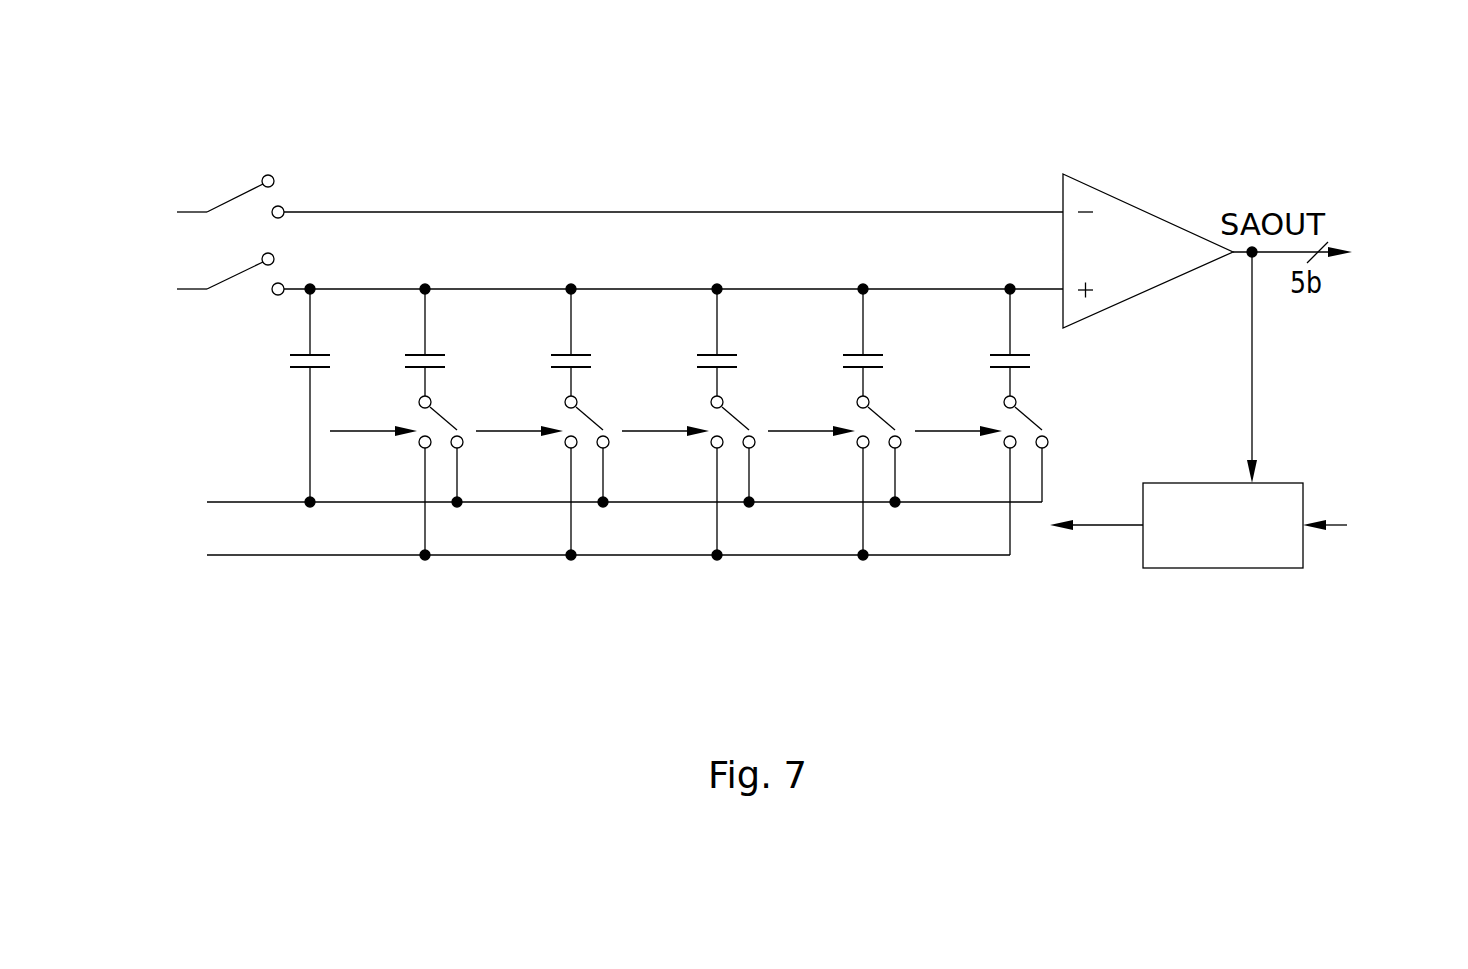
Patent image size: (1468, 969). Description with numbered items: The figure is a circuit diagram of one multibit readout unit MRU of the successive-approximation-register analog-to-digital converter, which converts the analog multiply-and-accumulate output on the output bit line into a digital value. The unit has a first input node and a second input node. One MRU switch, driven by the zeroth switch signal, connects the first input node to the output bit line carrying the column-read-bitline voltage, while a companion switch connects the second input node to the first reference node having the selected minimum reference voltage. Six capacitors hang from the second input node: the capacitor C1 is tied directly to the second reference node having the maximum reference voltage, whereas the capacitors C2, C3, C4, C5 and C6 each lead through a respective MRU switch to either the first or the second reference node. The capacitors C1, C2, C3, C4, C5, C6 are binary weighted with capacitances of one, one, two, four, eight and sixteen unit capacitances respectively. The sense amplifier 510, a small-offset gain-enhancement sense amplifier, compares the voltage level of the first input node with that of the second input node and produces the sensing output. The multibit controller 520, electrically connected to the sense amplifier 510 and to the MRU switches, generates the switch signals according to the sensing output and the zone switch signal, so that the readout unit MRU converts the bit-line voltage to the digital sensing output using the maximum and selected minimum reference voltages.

The sense amplifier 510 is at (1150, 210).
The multibit controller 520 is at (1222, 568).
The multibit readout unit MRU is at (642, 172).
The capacitor C1 is at (335, 360).
The capacitor C2 is at (450, 360).
The capacitor C3 is at (596, 360).
The capacitor C4 is at (742, 360).
The capacitor C5 is at (888, 360).
The capacitor C6 is at (1037, 360).